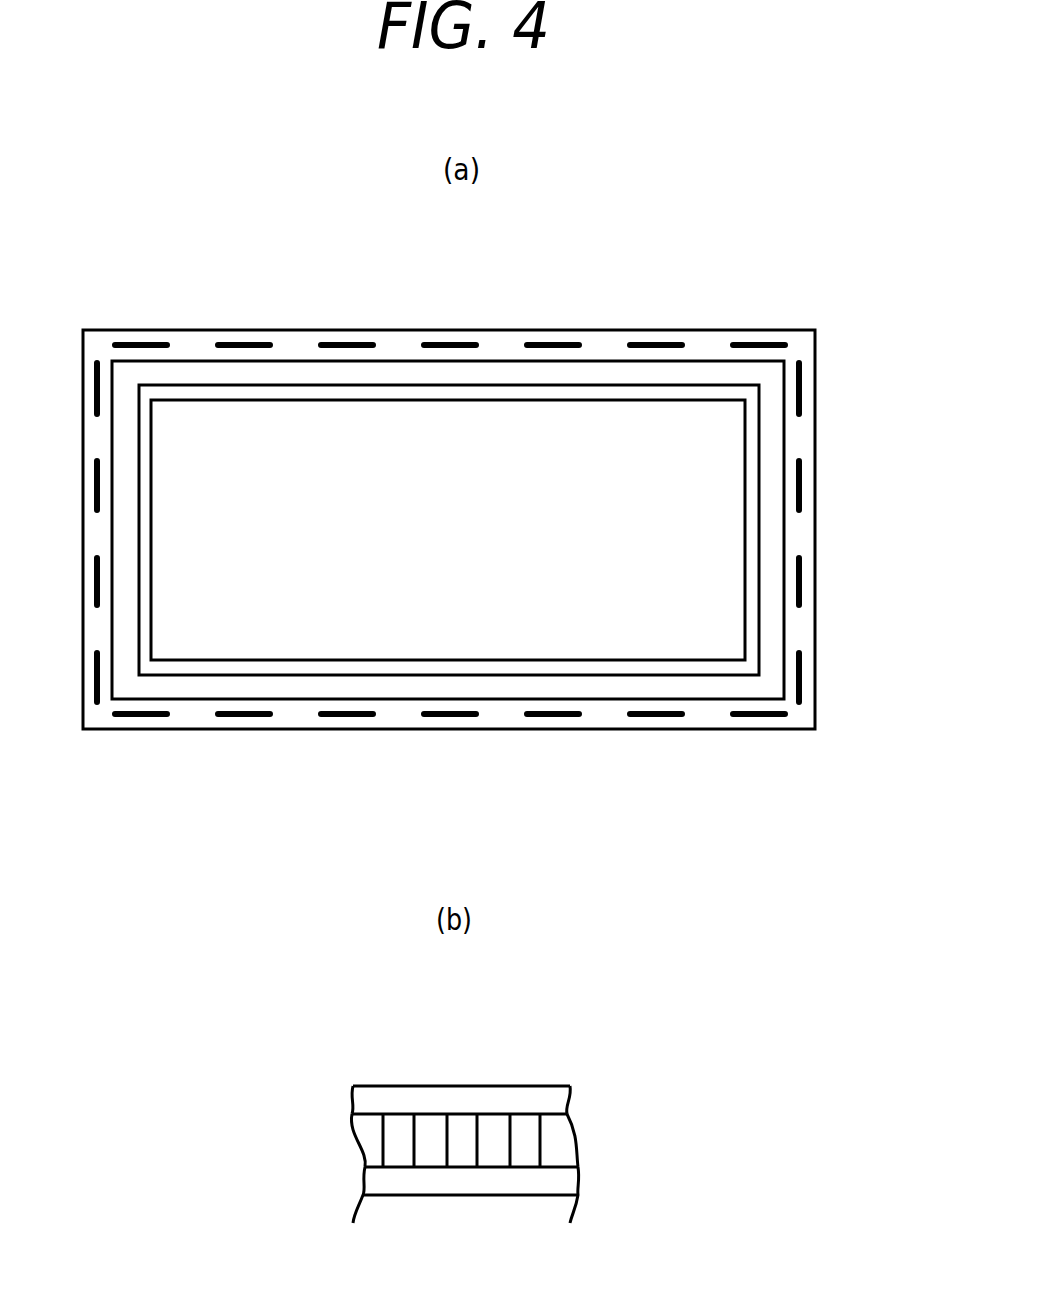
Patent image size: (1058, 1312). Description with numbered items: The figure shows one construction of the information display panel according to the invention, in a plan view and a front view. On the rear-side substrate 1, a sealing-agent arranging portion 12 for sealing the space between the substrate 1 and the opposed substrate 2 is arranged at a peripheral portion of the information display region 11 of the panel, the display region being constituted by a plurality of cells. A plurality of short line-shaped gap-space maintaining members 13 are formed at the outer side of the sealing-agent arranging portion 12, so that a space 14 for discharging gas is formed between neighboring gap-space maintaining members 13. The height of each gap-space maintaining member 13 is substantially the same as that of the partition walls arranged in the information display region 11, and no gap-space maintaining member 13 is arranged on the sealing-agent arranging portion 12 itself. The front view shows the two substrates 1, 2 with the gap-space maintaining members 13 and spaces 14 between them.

The substrate 1 is at (815, 655).
The substrate 2 is at (393, 1100).
The information display region 11 is at (712, 542).
The sealing-agent arranging portion 12 is at (772, 430).
The gap-space maintaining member 13 is at (453, 345).
The space for discharging gas 14 is at (295, 345).